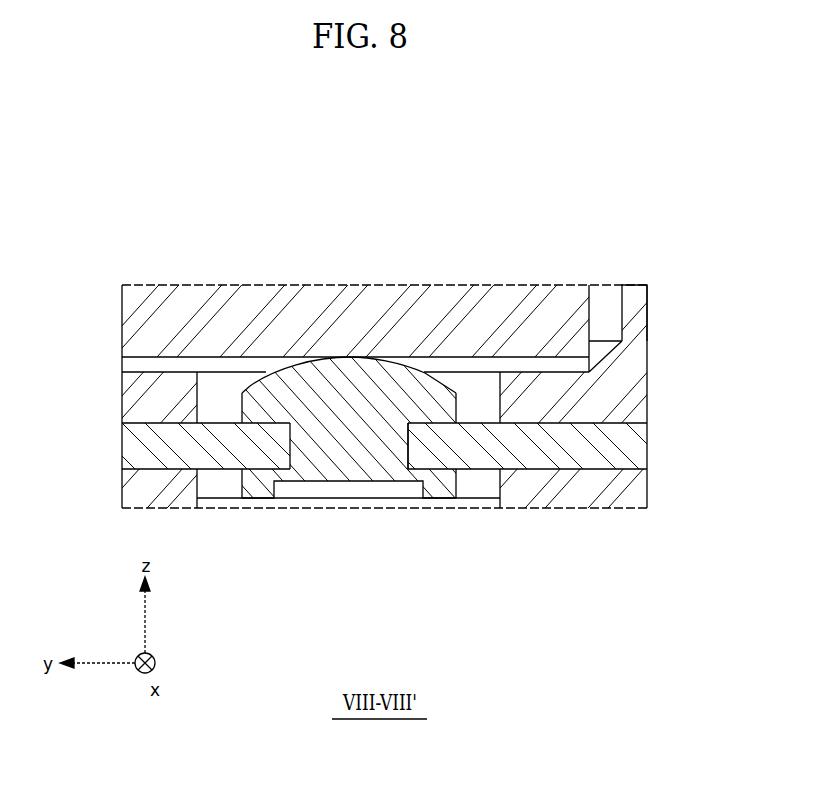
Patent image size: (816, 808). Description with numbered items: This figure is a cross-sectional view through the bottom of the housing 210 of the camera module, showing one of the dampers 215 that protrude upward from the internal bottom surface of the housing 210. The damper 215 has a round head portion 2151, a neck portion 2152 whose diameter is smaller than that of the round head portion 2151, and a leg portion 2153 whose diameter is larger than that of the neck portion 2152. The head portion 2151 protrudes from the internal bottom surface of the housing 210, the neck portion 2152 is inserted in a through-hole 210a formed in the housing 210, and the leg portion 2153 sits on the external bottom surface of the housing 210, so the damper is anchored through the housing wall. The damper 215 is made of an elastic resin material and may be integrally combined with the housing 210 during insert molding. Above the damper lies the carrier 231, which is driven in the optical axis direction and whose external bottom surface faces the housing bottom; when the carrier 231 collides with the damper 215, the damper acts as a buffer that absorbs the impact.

The housing 210 is at (424, 447).
The through-hole 210a is at (410, 440).
The damper 215 is at (344, 403).
The round head portion 2151 is at (333, 378).
The neck portion 2152 is at (348, 448).
The leg portion 2153 is at (259, 485).
The carrier 231 is at (590, 313).